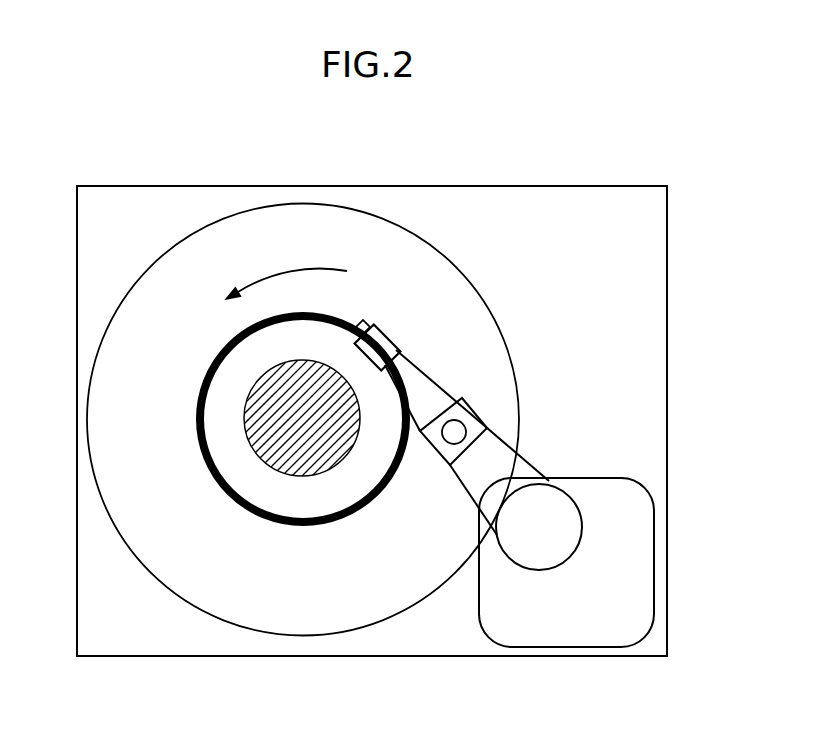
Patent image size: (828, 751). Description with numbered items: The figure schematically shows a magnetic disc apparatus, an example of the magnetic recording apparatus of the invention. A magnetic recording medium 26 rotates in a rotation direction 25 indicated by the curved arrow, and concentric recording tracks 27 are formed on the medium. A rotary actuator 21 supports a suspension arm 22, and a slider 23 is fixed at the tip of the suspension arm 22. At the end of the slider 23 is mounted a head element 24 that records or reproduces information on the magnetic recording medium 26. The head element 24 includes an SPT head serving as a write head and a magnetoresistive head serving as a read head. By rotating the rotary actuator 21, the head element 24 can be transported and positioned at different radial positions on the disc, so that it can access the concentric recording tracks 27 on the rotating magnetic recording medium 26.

The rotary actuator 21 is at (548, 538).
The suspension arm 22 is at (422, 389).
The slider 23 is at (385, 342).
The head element 24 is at (368, 327).
The rotation direction 25 is at (292, 265).
The magnetic recording medium 26 is at (385, 255).
The concentric recording tracks 27 is at (303, 527).